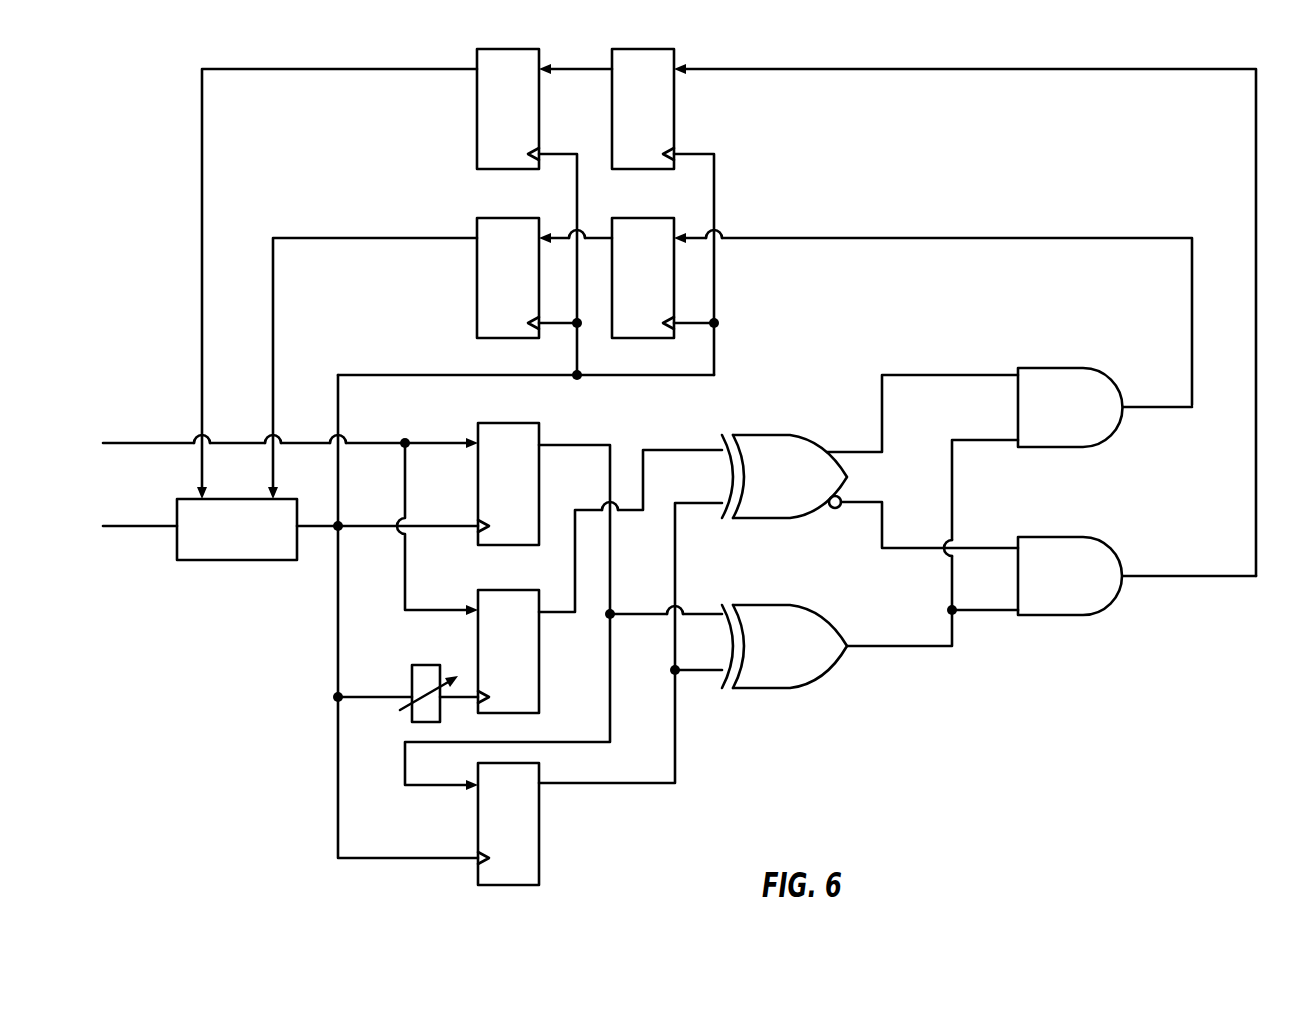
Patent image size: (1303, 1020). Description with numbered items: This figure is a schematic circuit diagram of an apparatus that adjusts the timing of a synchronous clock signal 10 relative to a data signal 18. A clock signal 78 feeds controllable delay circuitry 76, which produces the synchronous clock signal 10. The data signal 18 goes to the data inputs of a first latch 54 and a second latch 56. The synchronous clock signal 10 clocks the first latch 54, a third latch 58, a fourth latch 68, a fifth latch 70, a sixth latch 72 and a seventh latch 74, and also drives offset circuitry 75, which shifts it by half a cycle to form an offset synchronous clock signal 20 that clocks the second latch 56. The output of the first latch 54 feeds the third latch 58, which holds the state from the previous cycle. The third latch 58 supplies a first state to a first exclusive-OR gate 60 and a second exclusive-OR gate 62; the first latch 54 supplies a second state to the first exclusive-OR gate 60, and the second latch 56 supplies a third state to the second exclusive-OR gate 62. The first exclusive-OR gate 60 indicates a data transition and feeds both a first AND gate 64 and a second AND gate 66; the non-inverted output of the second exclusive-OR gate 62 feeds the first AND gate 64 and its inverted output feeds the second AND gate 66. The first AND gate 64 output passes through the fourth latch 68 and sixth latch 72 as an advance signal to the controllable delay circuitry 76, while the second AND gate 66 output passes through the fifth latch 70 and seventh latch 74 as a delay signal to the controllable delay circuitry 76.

The synchronous clock signal 10 is at (338, 792).
The data signal 18 is at (138, 443).
The offset synchronous clock signal 20 is at (463, 688).
The first latch 54 is at (527, 486).
The second latch 56 is at (527, 672).
The third latch 58 is at (527, 838).
The first exclusive-OR gate 60 is at (783, 668).
The second exclusive-OR gate 62 is at (778, 455).
The first AND gate 64 is at (1055, 388).
The second AND gate 66 is at (1068, 560).
The fourth latch 68 is at (641, 242).
The fifth latch 70 is at (662, 103).
The sixth latch 72 is at (497, 303).
The seventh latch 74 is at (527, 103).
The offset circuitry 75 is at (417, 678).
The controllable delay circuitry 76 is at (225, 538).
The clock signal 78 is at (130, 530).